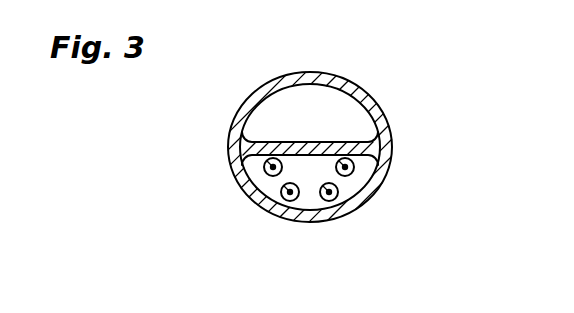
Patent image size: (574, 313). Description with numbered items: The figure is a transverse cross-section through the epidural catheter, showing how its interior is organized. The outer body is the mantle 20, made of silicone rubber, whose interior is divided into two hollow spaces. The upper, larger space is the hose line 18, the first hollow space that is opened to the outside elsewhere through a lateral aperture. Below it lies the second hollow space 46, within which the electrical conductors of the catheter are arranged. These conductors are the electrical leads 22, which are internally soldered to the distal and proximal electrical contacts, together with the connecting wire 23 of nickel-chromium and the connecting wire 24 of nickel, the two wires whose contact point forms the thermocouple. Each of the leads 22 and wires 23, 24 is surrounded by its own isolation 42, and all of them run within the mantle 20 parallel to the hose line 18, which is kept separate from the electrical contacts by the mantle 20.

The hose line 18 is at (310, 121).
The mantle 20 is at (310, 128).
The electrical leads 22 is at (283, 199).
The connecting wire 23 is at (354, 166).
The connecting wire 24 is at (245, 159).
The isolation 42 is at (281, 193).
The second hollow space 46 is at (308, 200).